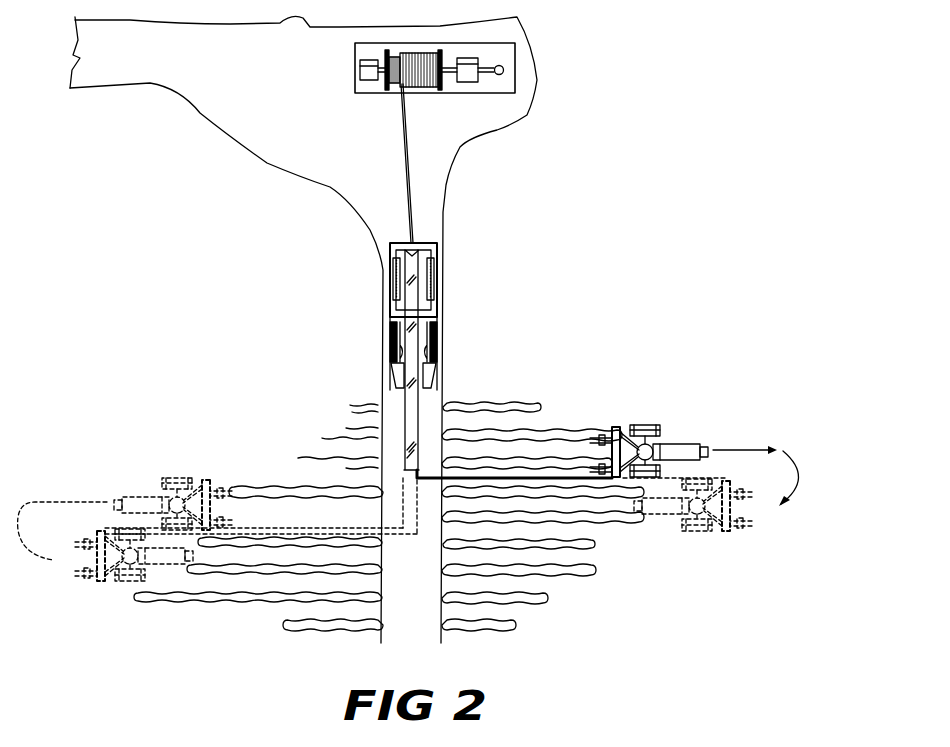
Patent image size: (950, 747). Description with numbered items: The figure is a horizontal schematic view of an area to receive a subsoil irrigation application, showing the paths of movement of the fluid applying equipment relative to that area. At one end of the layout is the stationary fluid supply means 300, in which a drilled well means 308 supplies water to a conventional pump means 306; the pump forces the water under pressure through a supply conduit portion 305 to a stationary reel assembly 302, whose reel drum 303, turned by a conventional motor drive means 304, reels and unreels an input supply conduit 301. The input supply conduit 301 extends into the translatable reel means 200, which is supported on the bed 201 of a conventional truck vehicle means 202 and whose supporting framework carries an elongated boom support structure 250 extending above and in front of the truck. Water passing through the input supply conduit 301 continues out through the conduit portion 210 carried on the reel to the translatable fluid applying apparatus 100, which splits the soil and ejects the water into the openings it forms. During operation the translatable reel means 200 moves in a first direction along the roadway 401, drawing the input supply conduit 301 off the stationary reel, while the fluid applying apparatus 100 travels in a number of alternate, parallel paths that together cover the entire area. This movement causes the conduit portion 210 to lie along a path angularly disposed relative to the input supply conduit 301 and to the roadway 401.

The translatable fluid applying apparatus 100 is at (640, 402).
The translatable reel means 200 is at (447, 315).
The bed 201 is at (432, 275).
The truck vehicle means 202 is at (432, 333).
The conduit portion 210 is at (527, 477).
The elongated boom support structure 250 is at (412, 413).
The stationary fluid supply means 300 is at (442, 76).
The input supply conduit 301 is at (405, 173).
The stationary reel assembly 302 is at (422, 51).
The reel drum 303 is at (395, 88).
The motor drive means 304 is at (360, 78).
The supply conduit portion 305 is at (447, 78).
The pump means 306 is at (473, 60).
The drilled well means 308 is at (504, 67).
The roadway 401 is at (425, 578).